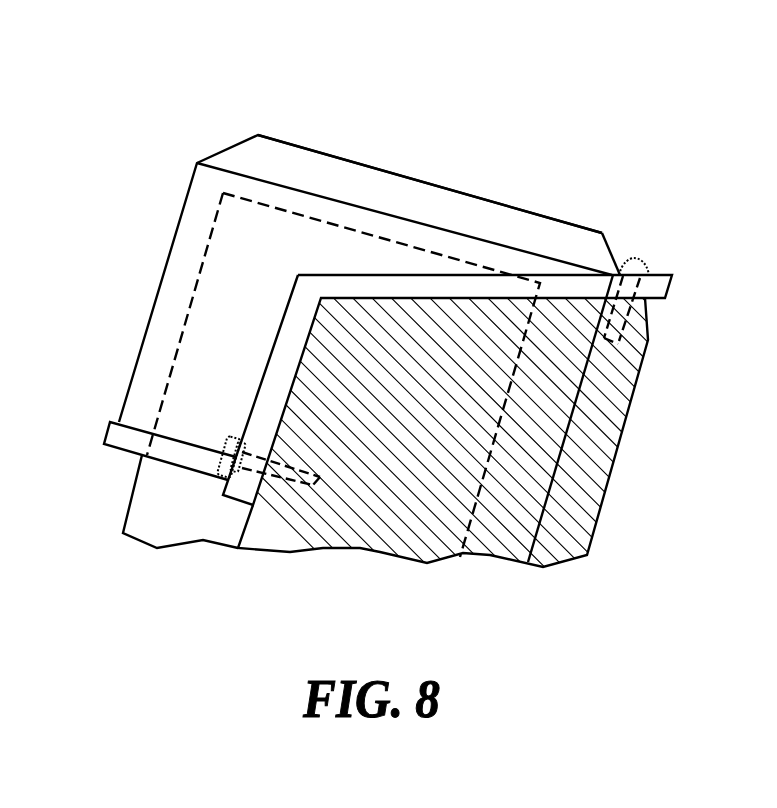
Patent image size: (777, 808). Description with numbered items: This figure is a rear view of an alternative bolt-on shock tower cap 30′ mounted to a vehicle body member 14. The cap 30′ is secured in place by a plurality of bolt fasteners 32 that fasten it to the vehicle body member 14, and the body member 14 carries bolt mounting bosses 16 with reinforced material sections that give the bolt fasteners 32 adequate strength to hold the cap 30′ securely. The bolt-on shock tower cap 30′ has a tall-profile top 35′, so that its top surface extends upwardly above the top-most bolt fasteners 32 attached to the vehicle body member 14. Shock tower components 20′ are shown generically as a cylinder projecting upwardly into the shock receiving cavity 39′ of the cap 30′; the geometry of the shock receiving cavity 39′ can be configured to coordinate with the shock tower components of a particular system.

The vehicle body member 14 is at (428, 495).
The bolt mounting boss 16 is at (573, 472).
The shock tower components 20′ is at (167, 512).
The bolt-on shock tower cap 30′ is at (157, 352).
The bolt fastener 32 is at (223, 440).
The tall-profile top 35′ is at (307, 148).
The shock receiving cavity 39′ is at (361, 232).